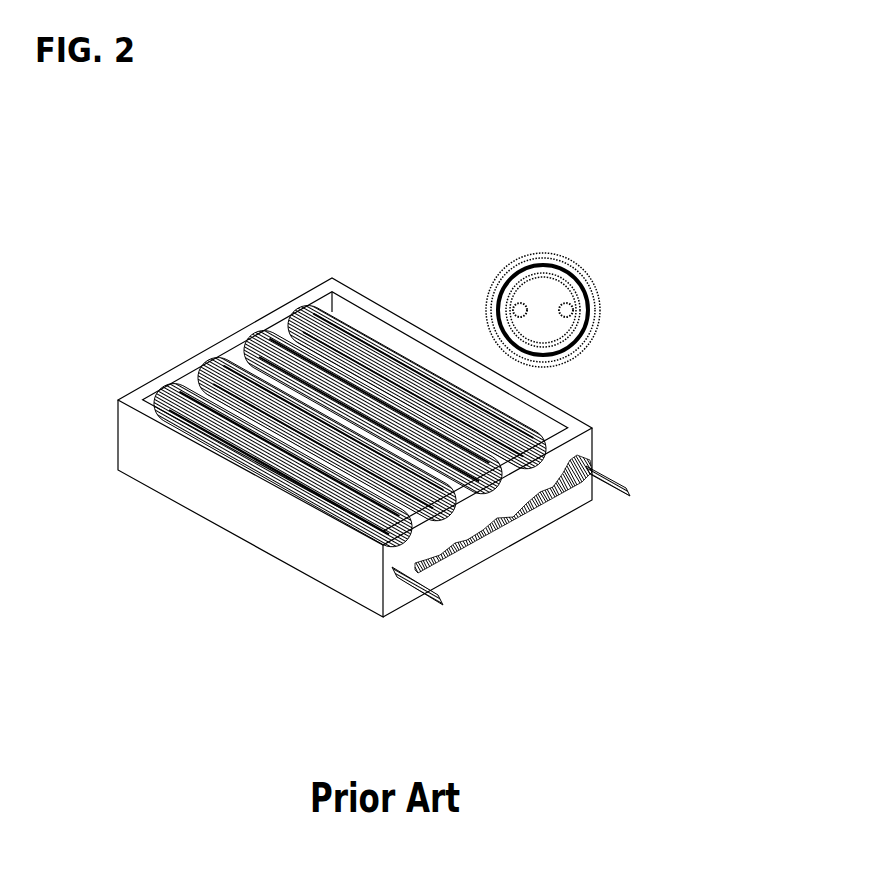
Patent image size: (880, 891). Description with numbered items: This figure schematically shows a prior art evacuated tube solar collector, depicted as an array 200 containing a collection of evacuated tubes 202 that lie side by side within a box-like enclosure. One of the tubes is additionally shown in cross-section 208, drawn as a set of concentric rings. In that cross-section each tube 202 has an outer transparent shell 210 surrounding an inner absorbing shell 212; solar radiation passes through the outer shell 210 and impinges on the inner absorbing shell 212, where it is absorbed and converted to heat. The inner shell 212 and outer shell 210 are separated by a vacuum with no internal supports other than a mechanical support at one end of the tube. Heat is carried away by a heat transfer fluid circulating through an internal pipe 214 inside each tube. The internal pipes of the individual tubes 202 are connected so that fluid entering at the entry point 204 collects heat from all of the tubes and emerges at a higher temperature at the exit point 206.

The enclosure 200 is at (262, 506).
The evacuated tube 202 is at (273, 353).
The entry point 204 is at (627, 492).
The exit point 206 is at (443, 603).
The outer jacket 208 is at (567, 360).
The outer transparent shell 210 is at (597, 283).
The inner absorbing shell 212 is at (597, 313).
The internal pipe 214 is at (550, 308).